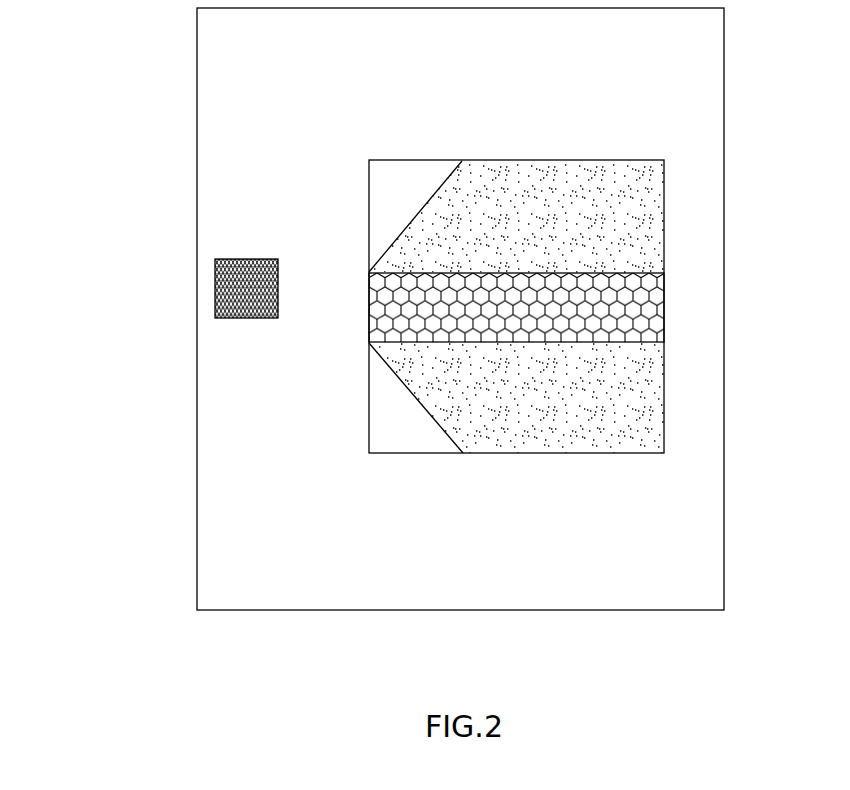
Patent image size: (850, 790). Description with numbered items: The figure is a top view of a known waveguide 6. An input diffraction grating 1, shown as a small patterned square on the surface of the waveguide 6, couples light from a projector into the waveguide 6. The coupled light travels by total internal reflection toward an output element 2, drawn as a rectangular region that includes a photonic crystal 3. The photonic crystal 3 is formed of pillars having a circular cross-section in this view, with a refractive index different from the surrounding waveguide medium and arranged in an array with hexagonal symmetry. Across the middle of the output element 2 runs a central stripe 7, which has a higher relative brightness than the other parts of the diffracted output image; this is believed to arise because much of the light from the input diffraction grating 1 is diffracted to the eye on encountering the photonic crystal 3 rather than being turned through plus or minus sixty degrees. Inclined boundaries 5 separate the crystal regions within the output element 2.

The input diffraction grating 1 is at (217, 278).
The output element 2 is at (665, 216).
The photonic crystal 3 is at (555, 195).
The inclined surfaces 5 is at (388, 388).
The waveguide 6 is at (229, 138).
The central stripe 7 is at (633, 297).